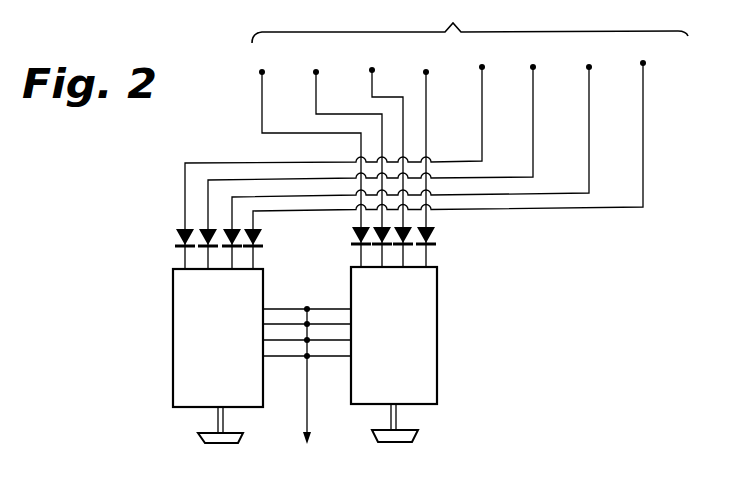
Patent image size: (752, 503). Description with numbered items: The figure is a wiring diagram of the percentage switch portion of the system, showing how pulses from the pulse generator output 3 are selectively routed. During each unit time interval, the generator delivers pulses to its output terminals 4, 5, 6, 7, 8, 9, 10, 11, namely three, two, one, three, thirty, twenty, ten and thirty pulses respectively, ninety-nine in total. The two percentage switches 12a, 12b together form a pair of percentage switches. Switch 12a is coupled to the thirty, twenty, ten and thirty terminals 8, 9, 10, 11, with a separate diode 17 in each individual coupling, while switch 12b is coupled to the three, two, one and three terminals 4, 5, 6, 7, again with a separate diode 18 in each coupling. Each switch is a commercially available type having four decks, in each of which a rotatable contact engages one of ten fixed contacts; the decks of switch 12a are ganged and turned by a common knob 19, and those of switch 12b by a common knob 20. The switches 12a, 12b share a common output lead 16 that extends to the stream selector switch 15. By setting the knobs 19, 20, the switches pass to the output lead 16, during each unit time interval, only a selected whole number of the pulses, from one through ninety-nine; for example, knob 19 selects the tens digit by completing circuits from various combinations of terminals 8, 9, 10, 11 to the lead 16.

The pulse generator output 3 is at (580, 25).
The pulse generator output terminal 4 is at (262, 72).
The pulse generator output terminal 5 is at (316, 72).
The pulse generator output terminal 6 is at (372, 70).
The pulse generator output terminal 7 is at (426, 72).
The pulse generator output terminal 8 is at (482, 67).
The pulse generator output terminal 9 is at (533, 67).
The pulse generator output terminal 10 is at (589, 67).
The pulse generator output terminal 11 is at (643, 63).
The percentage switch 12a is at (181, 346).
The percentage switch 12b is at (419, 340).
The stream selector switch 15 is at (341, 486).
The switch output lead 16 is at (308, 402).
The diode 17 is at (203, 231).
The diode 18 is at (404, 229).
The knob 19 is at (225, 440).
The knob 20 is at (390, 438).